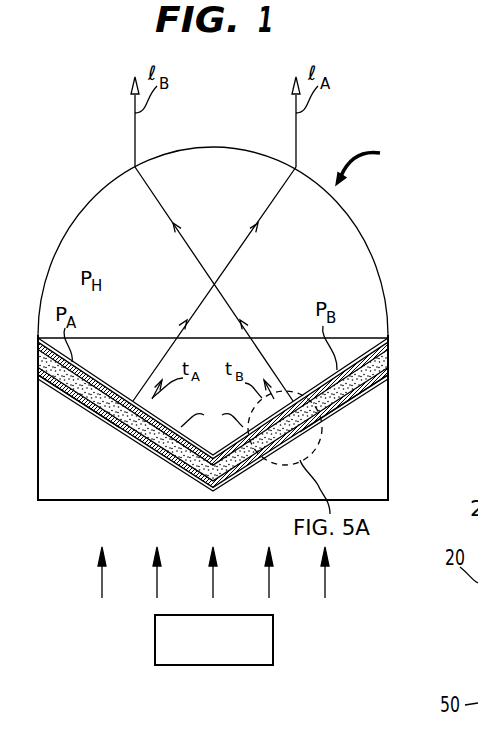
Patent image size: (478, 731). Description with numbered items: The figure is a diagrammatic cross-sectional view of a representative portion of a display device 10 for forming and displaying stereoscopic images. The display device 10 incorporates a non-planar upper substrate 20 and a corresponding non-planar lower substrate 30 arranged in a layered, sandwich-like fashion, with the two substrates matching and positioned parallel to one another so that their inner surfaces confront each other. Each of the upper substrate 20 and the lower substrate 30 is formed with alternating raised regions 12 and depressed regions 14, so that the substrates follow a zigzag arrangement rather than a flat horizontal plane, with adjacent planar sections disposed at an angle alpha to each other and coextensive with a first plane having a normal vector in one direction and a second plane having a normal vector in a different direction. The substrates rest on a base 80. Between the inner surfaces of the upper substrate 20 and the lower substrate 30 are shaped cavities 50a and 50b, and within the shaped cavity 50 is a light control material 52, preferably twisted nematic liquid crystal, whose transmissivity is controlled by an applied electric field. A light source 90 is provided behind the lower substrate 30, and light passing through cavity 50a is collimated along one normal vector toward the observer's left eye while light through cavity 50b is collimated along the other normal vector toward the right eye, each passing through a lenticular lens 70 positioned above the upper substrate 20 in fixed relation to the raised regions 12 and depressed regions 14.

The display device 10 is at (369, 162).
The raised regions 12 is at (290, 348).
The depressed regions 14 is at (198, 408).
The upper substrate 20 is at (357, 354).
The lower substrate 30 is at (363, 397).
The shaped cavity 50 is at (263, 463).
The shaped cavity 50a is at (113, 418).
The shaped cavity 50b is at (345, 408).
The light control material 52 is at (386, 361).
The lenticular lens 70 is at (358, 222).
The base 80 is at (370, 468).
The light source 90 is at (273, 637).